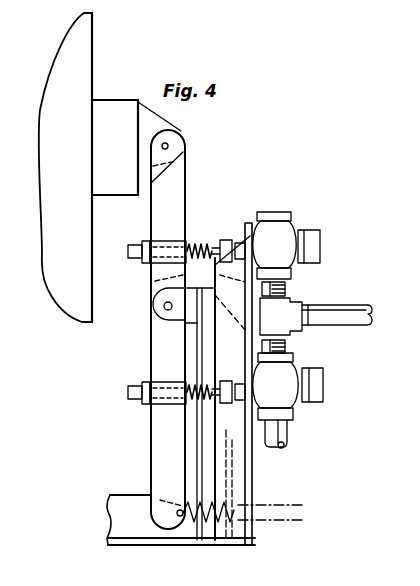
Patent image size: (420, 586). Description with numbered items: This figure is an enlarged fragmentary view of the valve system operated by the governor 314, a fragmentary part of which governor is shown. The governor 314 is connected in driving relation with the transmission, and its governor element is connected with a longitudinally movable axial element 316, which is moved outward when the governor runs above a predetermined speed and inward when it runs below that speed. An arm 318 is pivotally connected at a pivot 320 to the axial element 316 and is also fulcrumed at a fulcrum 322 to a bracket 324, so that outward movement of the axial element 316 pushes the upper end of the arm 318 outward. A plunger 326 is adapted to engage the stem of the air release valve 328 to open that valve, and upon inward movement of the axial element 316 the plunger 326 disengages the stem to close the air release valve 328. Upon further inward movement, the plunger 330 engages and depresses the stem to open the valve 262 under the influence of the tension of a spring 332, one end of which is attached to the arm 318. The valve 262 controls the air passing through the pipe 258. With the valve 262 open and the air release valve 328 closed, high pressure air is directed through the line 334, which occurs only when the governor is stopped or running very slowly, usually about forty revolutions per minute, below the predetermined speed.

The governor 314 is at (92, 48).
The longitudinally movable axial element 316 is at (137, 121).
The arm 318 is at (151, 211).
The pivot connection 320 is at (186, 143).
The fulcrum 322 is at (153, 318).
The bracket 324 is at (168, 317).
The plunger 326 is at (188, 243).
The air release valve 328 is at (285, 233).
The plunger 330 is at (196, 404).
The spring 332 is at (236, 512).
The line 334 is at (327, 312).
The valve 262 is at (288, 411).
The pipe 258 is at (285, 447).